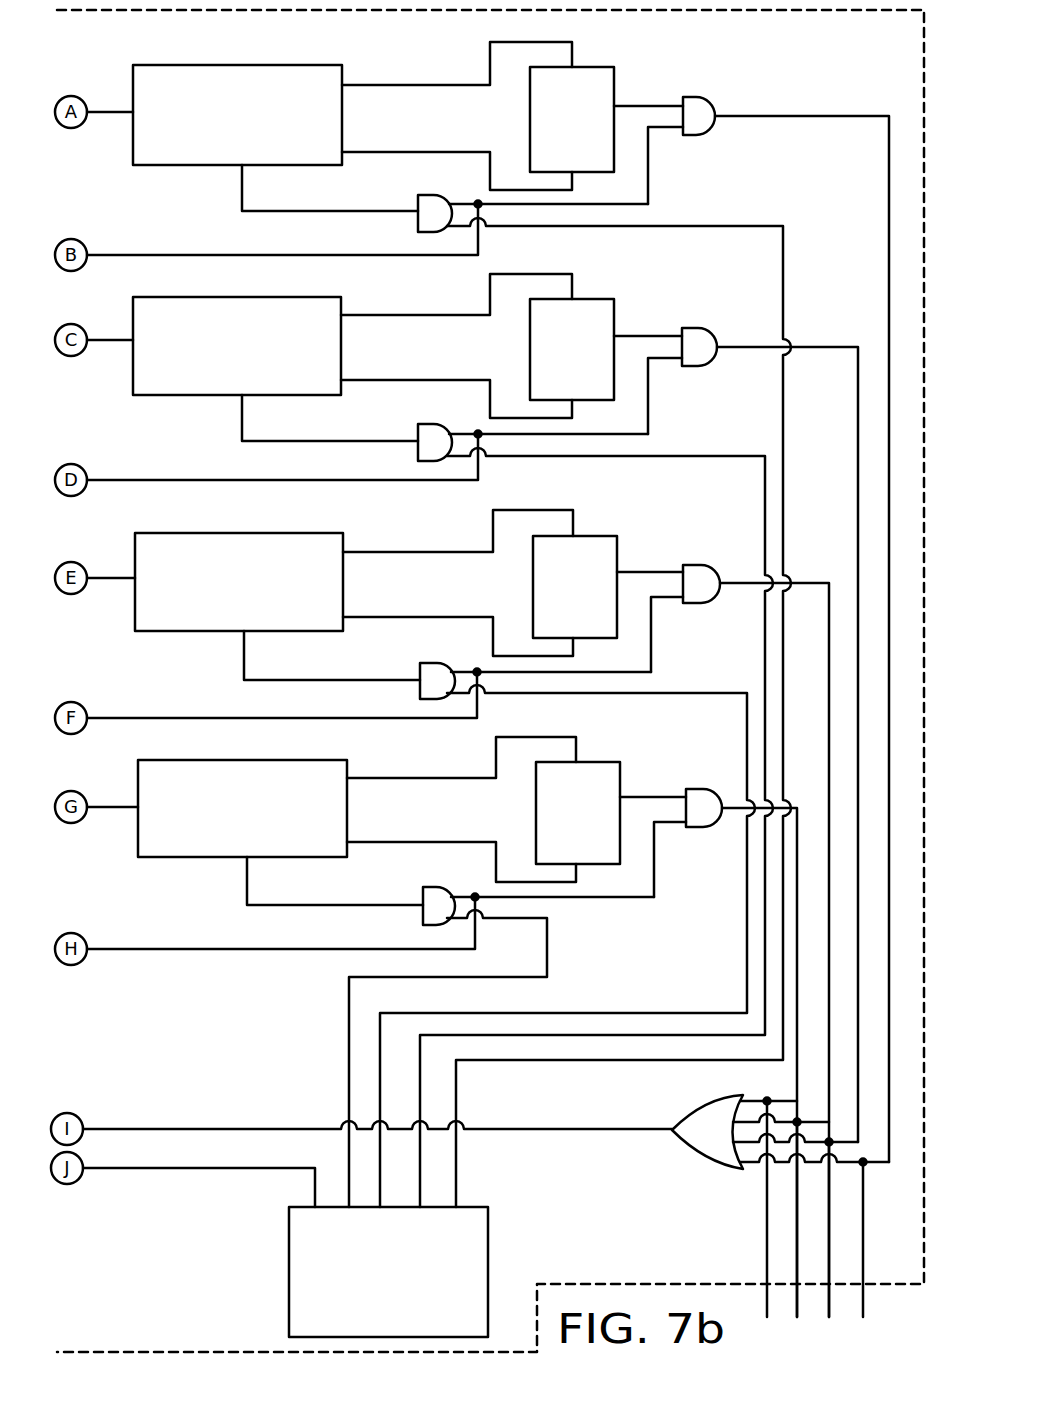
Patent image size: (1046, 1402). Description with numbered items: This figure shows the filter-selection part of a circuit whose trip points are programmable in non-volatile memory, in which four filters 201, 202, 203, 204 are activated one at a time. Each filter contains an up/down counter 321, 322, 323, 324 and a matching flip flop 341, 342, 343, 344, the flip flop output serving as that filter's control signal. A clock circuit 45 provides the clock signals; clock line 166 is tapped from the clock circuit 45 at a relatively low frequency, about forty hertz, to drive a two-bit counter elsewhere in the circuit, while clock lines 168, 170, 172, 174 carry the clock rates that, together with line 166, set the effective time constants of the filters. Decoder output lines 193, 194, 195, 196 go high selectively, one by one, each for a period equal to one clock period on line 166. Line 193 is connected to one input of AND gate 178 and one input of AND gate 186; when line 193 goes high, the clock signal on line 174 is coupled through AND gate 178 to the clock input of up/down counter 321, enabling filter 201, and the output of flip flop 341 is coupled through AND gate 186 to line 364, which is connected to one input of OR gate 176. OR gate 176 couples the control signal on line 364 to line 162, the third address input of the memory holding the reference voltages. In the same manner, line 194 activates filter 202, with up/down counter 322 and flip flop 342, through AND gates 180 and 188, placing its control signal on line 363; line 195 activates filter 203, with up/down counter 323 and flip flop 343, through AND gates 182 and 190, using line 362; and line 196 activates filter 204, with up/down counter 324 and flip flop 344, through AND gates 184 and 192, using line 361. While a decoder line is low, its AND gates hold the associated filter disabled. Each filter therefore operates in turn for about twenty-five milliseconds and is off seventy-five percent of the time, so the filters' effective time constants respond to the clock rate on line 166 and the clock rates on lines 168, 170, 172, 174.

The up/down counter 321 is at (212, 64).
The up/down counter 322 is at (200, 297).
The up/down counter 323 is at (215, 533).
The up/down counter 324 is at (212, 760).
The filter 201 is at (122, 138).
The filter 202 is at (122, 371).
The filter 203 is at (122, 610).
The filter 204 is at (122, 836).
The flip flop 341 is at (614, 68).
The flip flop 342 is at (614, 299).
The flip flop 343 is at (612, 536).
The flip flop 344 is at (616, 762).
The AND gate 186 is at (690, 97).
The AND gate 188 is at (690, 328).
The AND gate 190 is at (692, 565).
The AND gate 192 is at (690, 789).
The AND gate 178 is at (430, 195).
The AND gate 180 is at (430, 424).
The AND gate 182 is at (428, 662).
The AND gate 184 is at (432, 887).
The decoder output line 193 is at (208, 254).
The decoder output line 194 is at (236, 480).
The decoder output line 195 is at (235, 717).
The decoder output line 196 is at (232, 948).
The clock line 168 is at (349, 1093).
The clock line 170 is at (380, 1062).
The clock line 172 is at (420, 1071).
The clock line 174 is at (457, 1097).
The address line 162 is at (183, 1125).
The clock line 166 is at (210, 1168).
The clock circuit 45 is at (288, 1290).
The OR gate 176 is at (705, 1168).
The line 361 is at (767, 1215).
The line 362 is at (796, 1230).
The line 363 is at (829, 1205).
The line 364 is at (865, 1277).